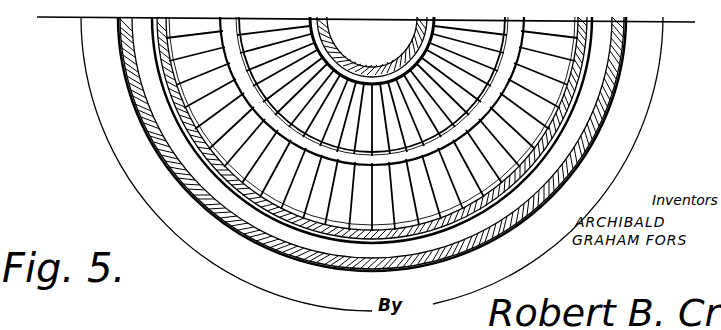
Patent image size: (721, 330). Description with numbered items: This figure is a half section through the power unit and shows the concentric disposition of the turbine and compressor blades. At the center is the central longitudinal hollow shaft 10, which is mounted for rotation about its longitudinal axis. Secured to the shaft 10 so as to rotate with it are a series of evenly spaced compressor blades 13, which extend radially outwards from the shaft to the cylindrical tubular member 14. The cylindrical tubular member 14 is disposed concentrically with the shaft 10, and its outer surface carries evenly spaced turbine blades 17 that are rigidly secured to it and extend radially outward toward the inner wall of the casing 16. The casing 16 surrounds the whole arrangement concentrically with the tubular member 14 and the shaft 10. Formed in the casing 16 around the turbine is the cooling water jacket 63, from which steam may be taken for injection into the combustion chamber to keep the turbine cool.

The central longitudinal hollow shaft 10 is at (372, 65).
The compressor blades 13 is at (458, 100).
The cylindrical tubular member 14 is at (542, 146).
The casing 16 is at (345, 237).
The turbine blades 17 is at (548, 80).
The cooling water jacket 63 is at (172, 133).